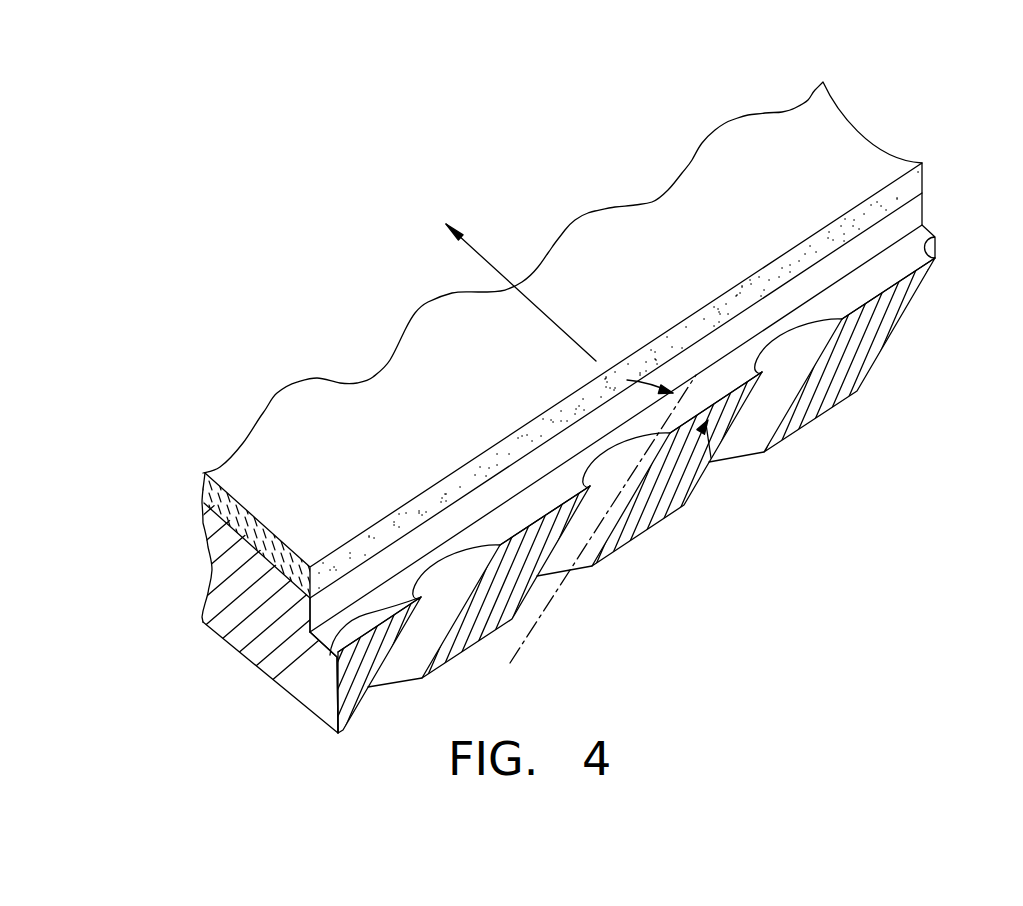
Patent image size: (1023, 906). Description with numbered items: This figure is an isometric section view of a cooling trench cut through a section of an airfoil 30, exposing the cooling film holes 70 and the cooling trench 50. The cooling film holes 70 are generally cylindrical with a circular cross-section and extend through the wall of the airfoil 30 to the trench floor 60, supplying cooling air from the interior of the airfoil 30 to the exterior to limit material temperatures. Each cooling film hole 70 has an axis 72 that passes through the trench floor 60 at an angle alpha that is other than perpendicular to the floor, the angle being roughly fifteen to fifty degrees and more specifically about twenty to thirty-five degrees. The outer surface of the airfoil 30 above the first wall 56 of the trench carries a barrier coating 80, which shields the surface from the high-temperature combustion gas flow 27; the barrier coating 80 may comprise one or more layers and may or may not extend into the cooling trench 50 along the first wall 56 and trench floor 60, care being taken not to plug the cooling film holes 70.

The airfoil 30 is at (596, 412).
The combustion gas flow 27 is at (535, 308).
The cooling trench 50 is at (333, 646).
The first wall 56 is at (300, 637).
The trench floor 60 is at (336, 722).
The cooling film holes 70 is at (410, 668).
The axis 72 is at (522, 648).
The barrier coating 80 is at (358, 550).